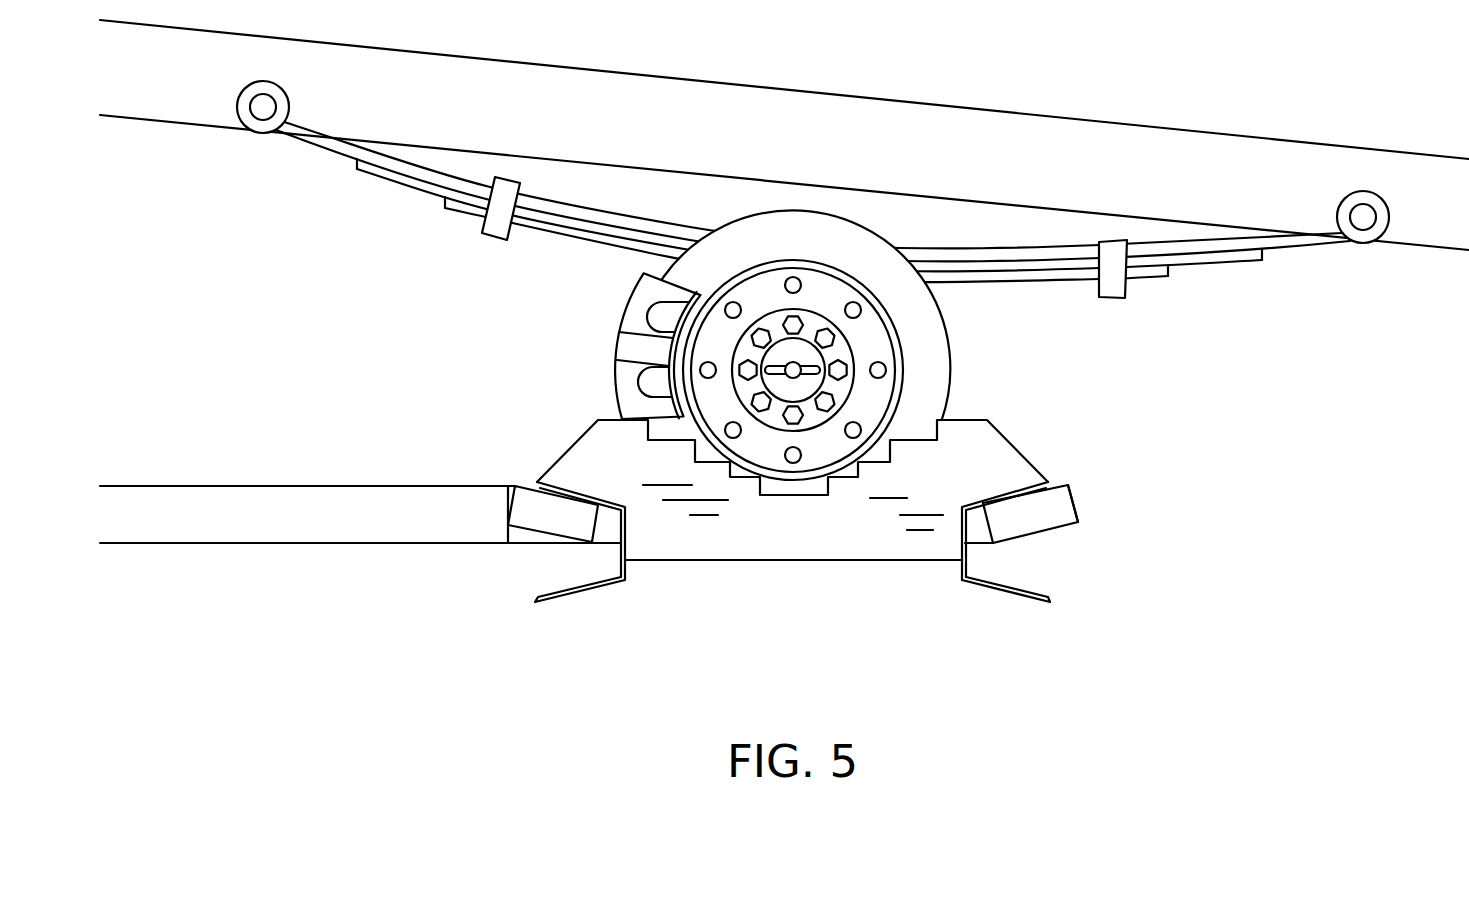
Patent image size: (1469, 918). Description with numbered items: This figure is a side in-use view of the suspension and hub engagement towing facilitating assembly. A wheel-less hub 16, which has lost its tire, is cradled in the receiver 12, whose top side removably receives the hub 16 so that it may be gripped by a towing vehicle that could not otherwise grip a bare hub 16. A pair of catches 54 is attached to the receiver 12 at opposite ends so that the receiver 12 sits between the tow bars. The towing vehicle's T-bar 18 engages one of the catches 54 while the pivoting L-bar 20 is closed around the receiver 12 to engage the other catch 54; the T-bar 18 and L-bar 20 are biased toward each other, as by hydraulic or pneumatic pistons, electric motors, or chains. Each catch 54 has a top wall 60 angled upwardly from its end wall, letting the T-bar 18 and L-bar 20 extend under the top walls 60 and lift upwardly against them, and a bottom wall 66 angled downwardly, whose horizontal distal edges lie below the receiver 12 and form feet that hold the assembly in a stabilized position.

The receiver 12 is at (758, 622).
The hub 16 is at (933, 358).
The T-bar 18 is at (543, 518).
The L-bar 20 is at (1078, 500).
The catches 54 is at (835, 609).
The top walls 60 is at (983, 500).
The bottom walls 66 is at (1032, 603).